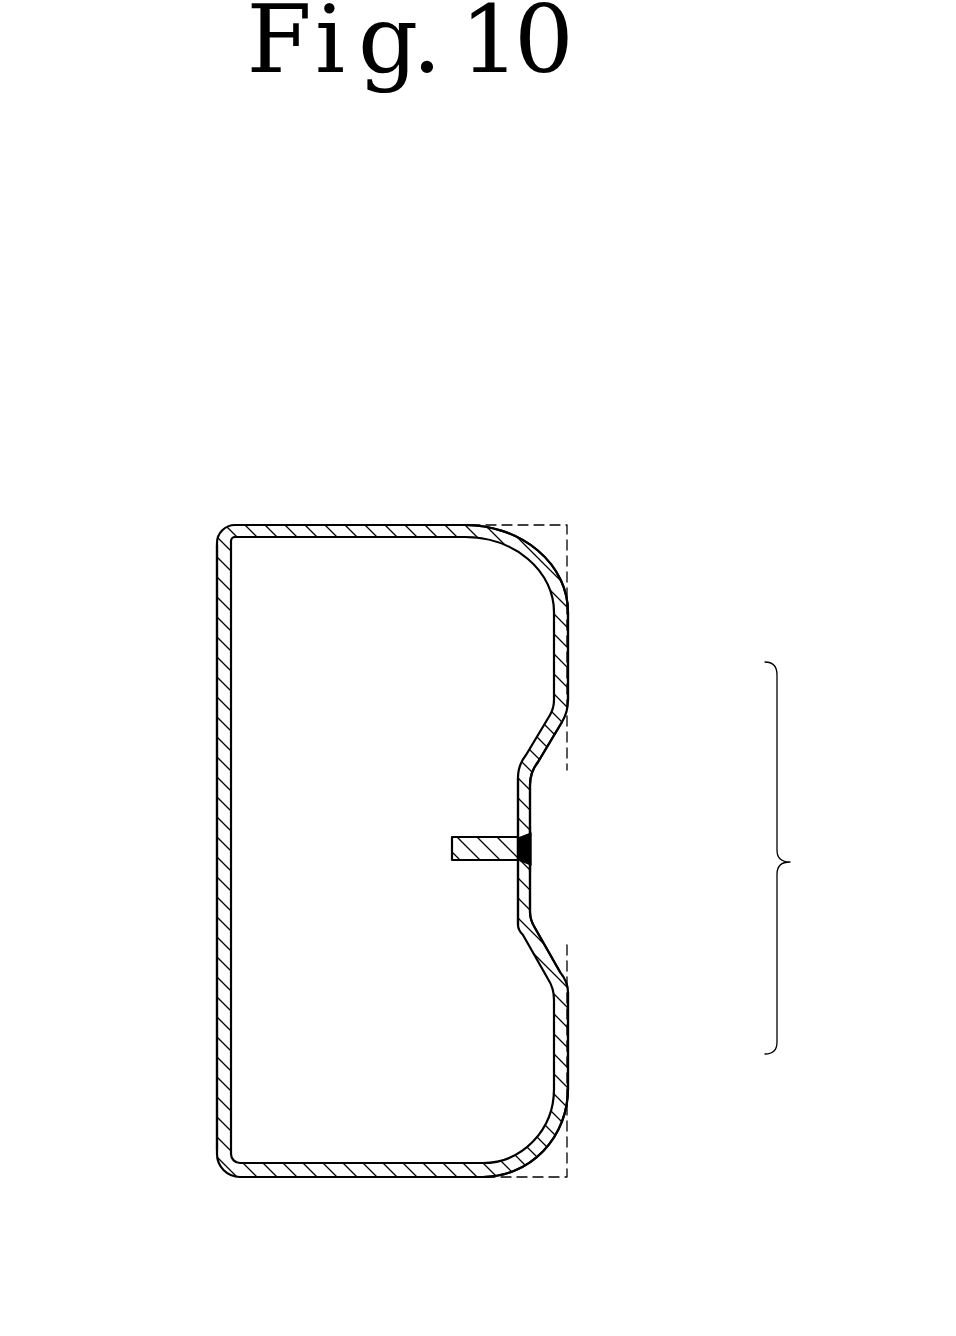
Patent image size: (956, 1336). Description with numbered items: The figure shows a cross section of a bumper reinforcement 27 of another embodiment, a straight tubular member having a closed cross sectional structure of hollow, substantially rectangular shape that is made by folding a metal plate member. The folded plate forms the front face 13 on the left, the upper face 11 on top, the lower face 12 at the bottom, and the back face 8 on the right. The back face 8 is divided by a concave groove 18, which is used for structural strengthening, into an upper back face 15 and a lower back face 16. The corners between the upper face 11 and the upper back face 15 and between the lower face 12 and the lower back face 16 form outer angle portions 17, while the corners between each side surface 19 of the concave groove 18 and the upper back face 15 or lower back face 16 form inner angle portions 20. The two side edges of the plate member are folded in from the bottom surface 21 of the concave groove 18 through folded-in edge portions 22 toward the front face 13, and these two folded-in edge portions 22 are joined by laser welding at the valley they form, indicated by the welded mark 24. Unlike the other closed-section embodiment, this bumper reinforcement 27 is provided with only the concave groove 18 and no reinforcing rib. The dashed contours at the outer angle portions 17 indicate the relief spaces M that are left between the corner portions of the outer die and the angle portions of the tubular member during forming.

The back face 8 is at (796, 858).
The upper face 11 is at (355, 524).
The lower face 12 is at (378, 1178).
The front face 13 is at (217, 614).
The upper back face 15 is at (568, 654).
The lower back face 16 is at (568, 1053).
The outer angle portion 17 is at (528, 541).
The concave groove 18 is at (526, 894).
The side surface of the concave groove 19 is at (536, 773).
The inner angle portion 20 is at (563, 742).
The bottom surface of the concave groove 21 is at (517, 882).
The folded-in edge portion 22 is at (531, 830).
The welded mark 24 is at (531, 848).
The bumper reinforcement 27 is at (208, 580).
The relief space M is at (546, 543).